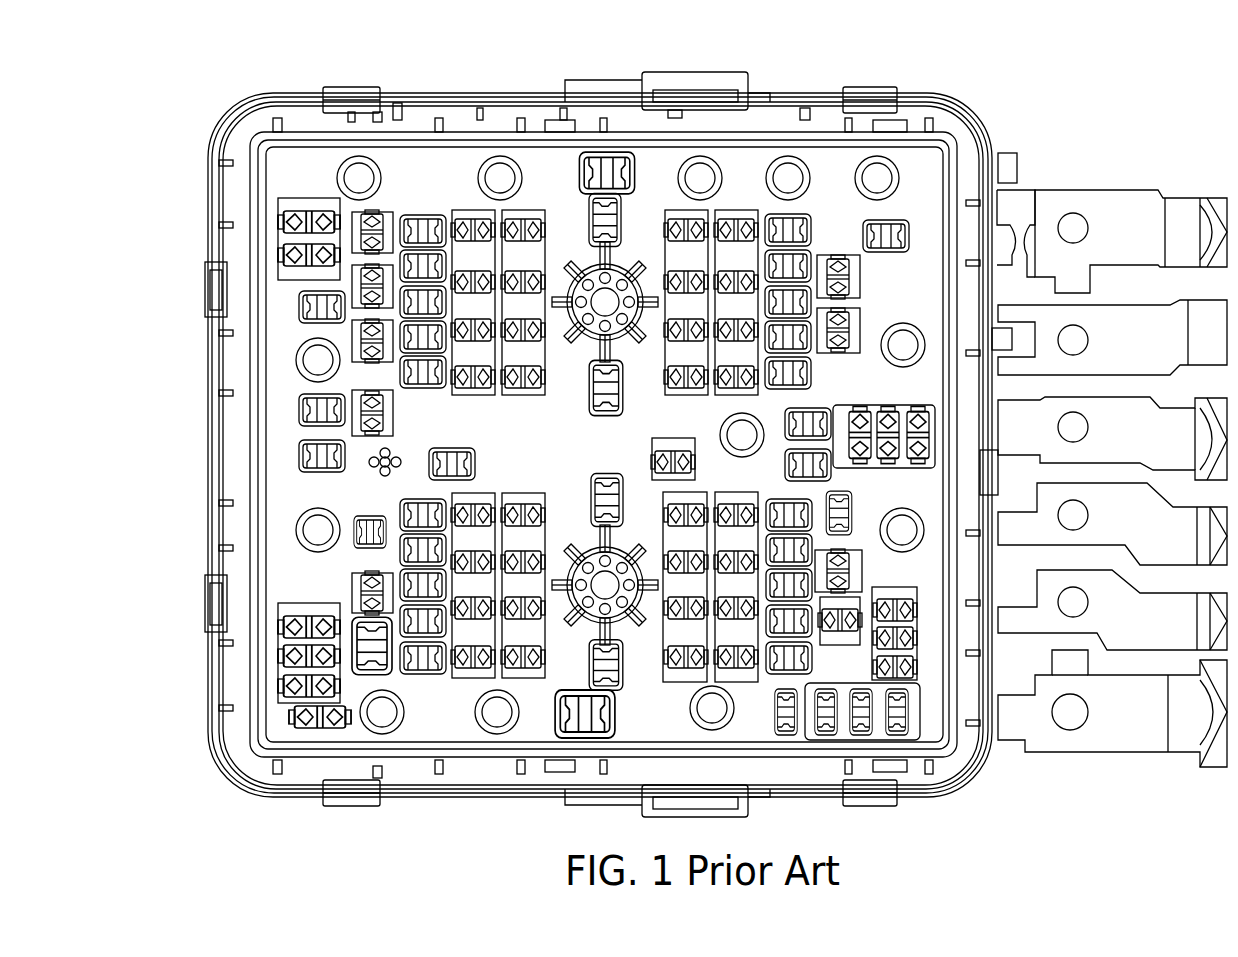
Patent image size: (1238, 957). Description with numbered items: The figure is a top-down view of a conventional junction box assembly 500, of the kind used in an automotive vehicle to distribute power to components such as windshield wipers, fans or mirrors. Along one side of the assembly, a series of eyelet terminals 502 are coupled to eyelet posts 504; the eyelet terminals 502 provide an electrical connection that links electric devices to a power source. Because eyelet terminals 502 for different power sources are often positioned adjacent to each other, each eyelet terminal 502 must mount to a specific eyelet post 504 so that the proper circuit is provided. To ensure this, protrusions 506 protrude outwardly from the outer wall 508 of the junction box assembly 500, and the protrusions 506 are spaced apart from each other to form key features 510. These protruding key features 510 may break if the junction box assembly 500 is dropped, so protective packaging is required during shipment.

The junction box assembly 500 is at (185, 72).
The eyelet terminal 502 is at (1150, 190).
The eyelet post 504 is at (1073, 228).
The protrusion 506 is at (1008, 226).
The outer wall 508 is at (952, 104).
The key feature 510 is at (1006, 695).